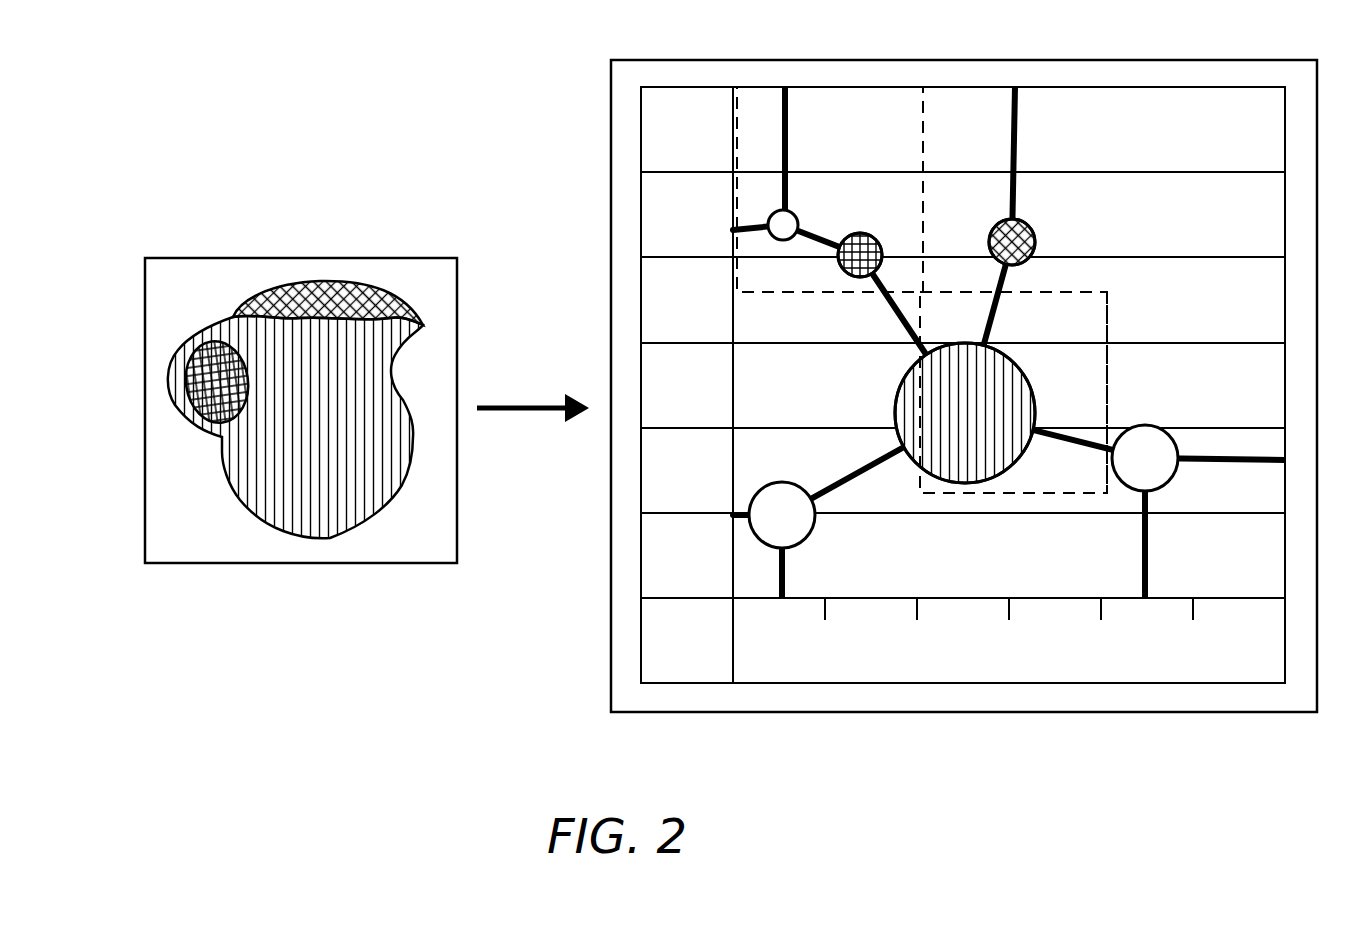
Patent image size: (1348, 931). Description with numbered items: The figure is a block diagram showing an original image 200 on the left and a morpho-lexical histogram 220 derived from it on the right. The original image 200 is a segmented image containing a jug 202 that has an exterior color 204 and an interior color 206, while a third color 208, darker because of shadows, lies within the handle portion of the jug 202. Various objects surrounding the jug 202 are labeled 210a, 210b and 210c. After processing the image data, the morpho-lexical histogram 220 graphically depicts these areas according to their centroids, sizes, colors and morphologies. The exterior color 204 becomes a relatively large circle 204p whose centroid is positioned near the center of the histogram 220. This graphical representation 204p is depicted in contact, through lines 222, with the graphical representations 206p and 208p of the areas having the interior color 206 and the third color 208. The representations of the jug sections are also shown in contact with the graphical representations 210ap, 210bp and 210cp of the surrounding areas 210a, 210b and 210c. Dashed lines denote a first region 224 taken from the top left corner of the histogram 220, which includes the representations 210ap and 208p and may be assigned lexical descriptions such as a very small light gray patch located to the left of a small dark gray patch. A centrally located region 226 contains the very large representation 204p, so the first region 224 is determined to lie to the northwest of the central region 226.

The original image 200 is at (181, 222).
The jug 202 is at (268, 542).
The exterior color 204 is at (358, 495).
The interior color 206 is at (334, 302).
The third color 208 is at (222, 400).
The object surrounding the jug 210a is at (176, 325).
The object surrounding the jug 210b is at (180, 538).
The object surrounding the jug 210c is at (440, 513).
The morpho-lexical histogram 220 is at (630, 38).
The lines 222 is at (1017, 312).
The first region 224 is at (925, 150).
The central region 226 is at (1110, 333).
The graphical representation of exterior color 204p is at (1038, 405).
The graphical representation of interior color 206p is at (1036, 237).
The graphical representation of third color 208p is at (880, 248).
The graphical representation of surrounding area 210a 210ap is at (797, 227).
The graphical representation of surrounding area 210b 210bp is at (813, 530).
The graphical representation of surrounding area 210c 210cp is at (1176, 438).